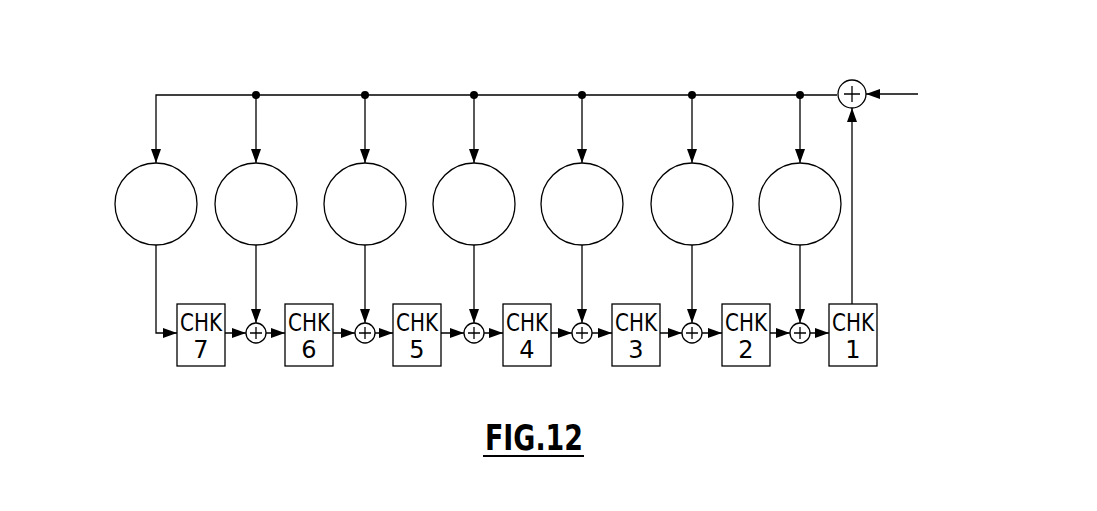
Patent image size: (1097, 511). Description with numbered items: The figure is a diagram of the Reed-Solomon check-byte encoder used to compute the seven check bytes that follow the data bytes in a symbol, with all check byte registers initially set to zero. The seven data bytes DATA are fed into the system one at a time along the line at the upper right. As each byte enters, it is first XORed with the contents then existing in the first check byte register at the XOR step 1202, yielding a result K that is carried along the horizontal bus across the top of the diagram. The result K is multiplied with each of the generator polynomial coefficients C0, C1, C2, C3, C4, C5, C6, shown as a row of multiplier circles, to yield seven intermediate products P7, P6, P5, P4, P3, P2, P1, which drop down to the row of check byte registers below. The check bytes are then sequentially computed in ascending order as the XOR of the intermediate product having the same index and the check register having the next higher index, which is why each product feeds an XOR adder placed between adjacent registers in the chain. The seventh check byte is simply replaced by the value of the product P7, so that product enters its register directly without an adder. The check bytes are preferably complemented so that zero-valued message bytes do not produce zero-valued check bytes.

The XOR step 1202 is at (862, 105).
The XOR result K is at (628, 82).
The generator polynomial coefficient C0 is at (135, 170).
The generator polynomial coefficient C1 is at (247, 170).
The generator polynomial coefficient C2 is at (356, 170).
The generator polynomial coefficient C3 is at (465, 170).
The generator polynomial coefficient C4 is at (573, 170).
The generator polynomial coefficient C5 is at (683, 170).
The generator polynomial coefficient C6 is at (791, 170).
The intermediate product P7 is at (156, 278).
The intermediate product P6 is at (256, 278).
The intermediate product P5 is at (365, 278).
The intermediate product P4 is at (474, 278).
The intermediate product P3 is at (582, 278).
The intermediate product P2 is at (692, 278).
The intermediate product P1 is at (800, 278).
The data bytes DATA is at (858, 64).